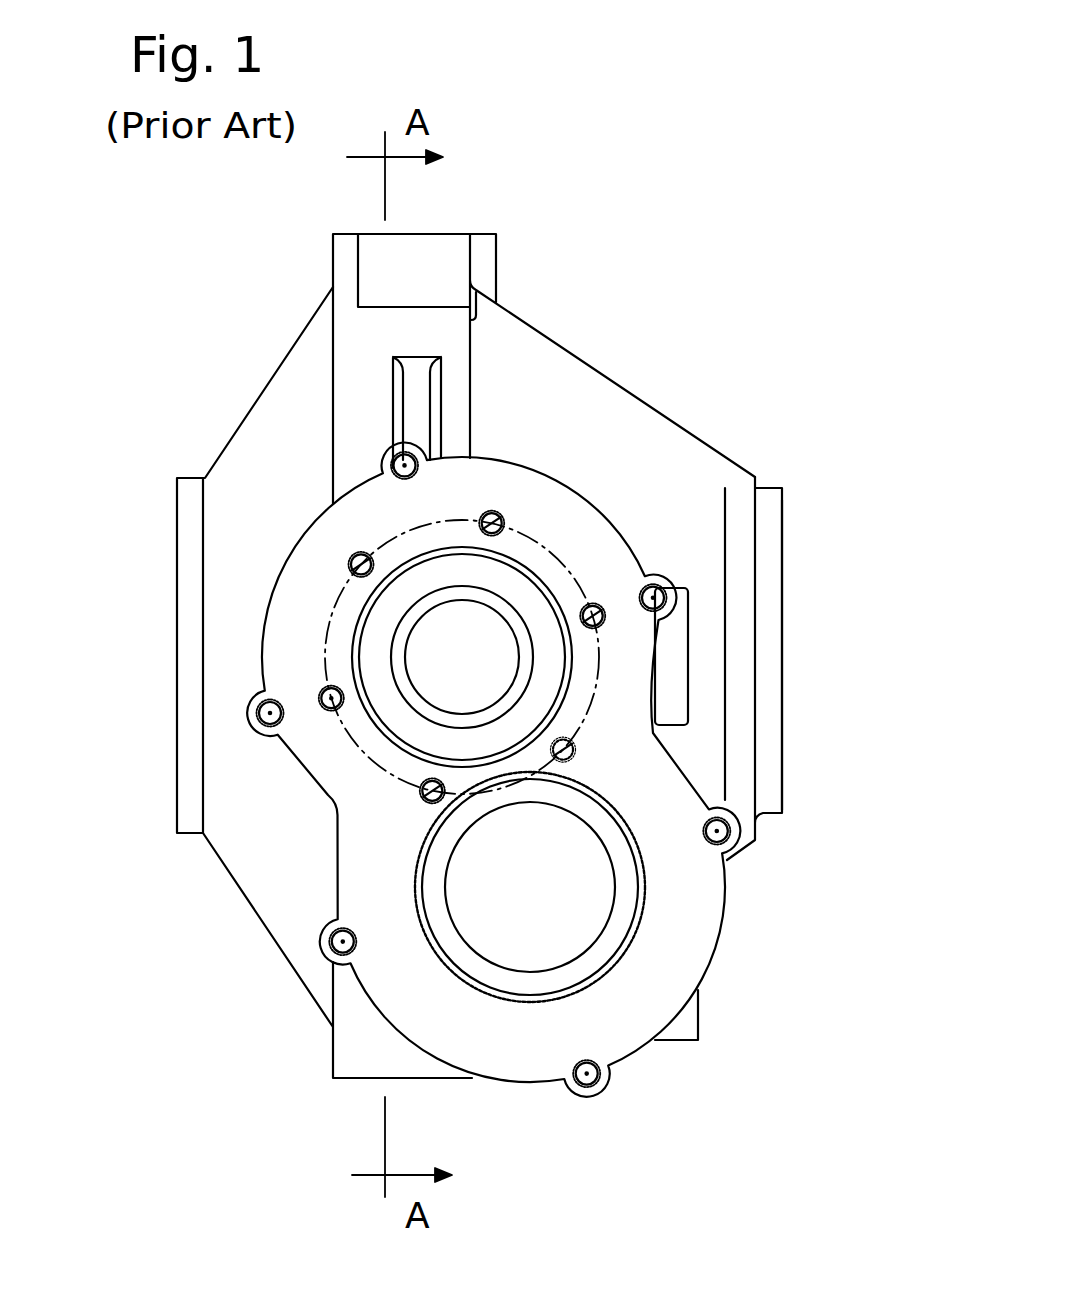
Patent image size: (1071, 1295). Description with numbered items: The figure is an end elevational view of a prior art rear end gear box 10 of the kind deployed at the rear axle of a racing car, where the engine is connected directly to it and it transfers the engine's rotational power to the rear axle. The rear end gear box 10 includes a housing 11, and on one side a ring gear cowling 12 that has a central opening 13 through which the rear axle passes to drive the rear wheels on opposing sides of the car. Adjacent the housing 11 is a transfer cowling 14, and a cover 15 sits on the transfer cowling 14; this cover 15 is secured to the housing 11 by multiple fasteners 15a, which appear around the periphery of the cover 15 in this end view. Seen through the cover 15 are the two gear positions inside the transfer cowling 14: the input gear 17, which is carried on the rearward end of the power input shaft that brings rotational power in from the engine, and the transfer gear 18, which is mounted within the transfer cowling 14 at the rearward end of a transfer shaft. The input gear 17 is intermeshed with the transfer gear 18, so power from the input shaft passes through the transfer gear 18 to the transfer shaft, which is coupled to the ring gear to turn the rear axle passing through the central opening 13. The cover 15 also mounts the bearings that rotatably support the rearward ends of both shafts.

The rear end gear box 10 is at (652, 243).
The housing 11 is at (605, 405).
The ring gear cowling 12 is at (823, 668).
The central opening 13 is at (808, 670).
The transfer cowling 14 is at (323, 800).
The cover 15 is at (702, 940).
The fasteners 15a is at (648, 565).
The input gear 17 is at (447, 963).
The transfer gear 18 is at (357, 625).